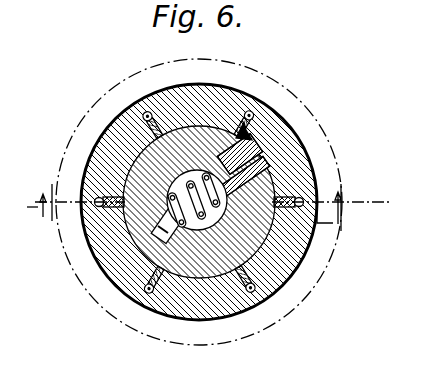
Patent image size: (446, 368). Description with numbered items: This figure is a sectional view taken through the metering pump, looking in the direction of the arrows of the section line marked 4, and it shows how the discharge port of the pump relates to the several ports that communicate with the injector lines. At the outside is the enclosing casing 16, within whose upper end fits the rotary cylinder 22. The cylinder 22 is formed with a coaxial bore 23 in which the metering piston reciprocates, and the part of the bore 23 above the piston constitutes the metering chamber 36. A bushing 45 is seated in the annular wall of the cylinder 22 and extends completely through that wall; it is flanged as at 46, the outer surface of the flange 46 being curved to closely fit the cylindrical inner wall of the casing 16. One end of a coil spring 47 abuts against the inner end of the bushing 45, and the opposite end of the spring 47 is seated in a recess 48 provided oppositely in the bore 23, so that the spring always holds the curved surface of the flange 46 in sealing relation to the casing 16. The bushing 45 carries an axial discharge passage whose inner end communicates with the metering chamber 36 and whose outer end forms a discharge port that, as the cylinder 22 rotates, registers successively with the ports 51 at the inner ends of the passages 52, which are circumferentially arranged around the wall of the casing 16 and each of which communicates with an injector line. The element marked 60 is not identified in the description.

The enclosing casing 16 is at (107, 122).
The rotary cylinder 22 is at (256, 146).
The bore 23 is at (165, 300).
The metering chamber 36 is at (303, 301).
The bushing 45 is at (304, 199).
The flange 46 is at (258, 170).
The coil spring 47 is at (135, 228).
The recess 48 is at (120, 186).
The ports 51 is at (160, 118).
The passages 52 is at (140, 110).
The block 60 is at (252, 158).
The section line 4- 4 is at (208, 207).